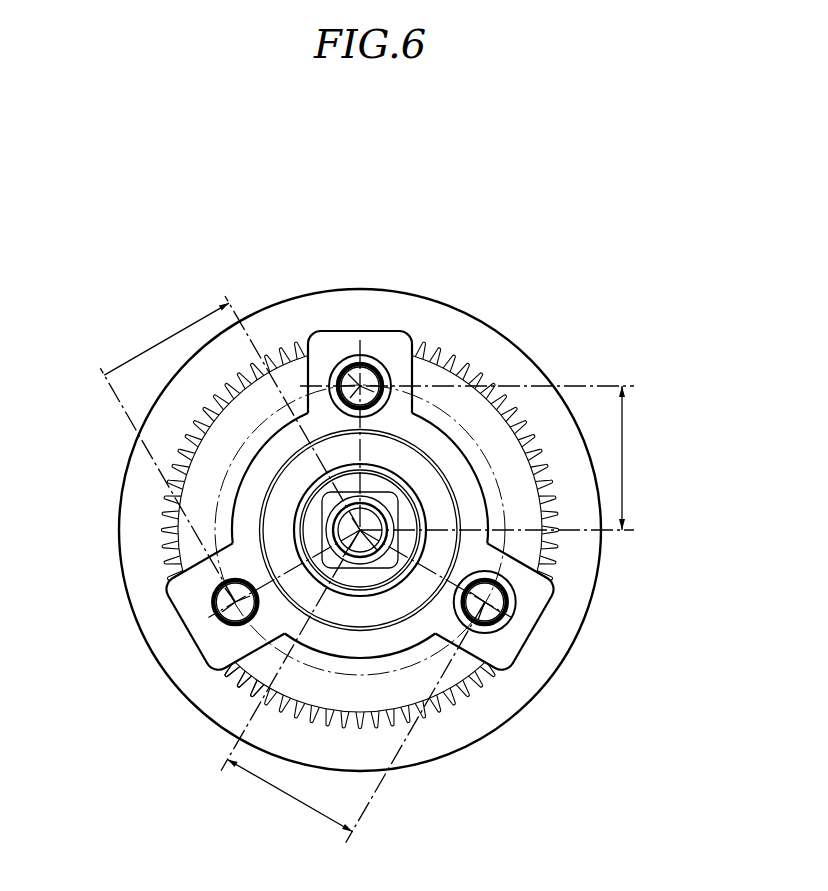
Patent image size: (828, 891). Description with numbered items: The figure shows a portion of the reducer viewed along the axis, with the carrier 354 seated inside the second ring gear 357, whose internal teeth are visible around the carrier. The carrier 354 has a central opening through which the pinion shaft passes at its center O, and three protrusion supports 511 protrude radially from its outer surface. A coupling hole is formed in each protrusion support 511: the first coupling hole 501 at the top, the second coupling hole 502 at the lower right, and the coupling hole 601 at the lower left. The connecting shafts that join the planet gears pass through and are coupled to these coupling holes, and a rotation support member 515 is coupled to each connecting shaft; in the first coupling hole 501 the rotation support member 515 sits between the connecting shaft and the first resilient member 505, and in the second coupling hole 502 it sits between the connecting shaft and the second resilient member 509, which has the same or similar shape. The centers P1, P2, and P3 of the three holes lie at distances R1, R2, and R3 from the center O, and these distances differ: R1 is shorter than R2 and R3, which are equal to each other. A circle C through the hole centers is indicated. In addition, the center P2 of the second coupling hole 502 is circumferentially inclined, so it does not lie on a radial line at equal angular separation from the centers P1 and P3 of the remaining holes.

The second ring gear 357 is at (587, 578).
The first coupling hole 501 is at (423, 355).
The coupling hole 601 is at (233, 667).
The carrier 354 is at (413, 640).
The protrusion supports 511 is at (403, 340).
The first resilient member 505 is at (358, 355).
The second resilient member 509 is at (497, 632).
The second coupling hole 502 is at (520, 614).
The rotation support member 515 is at (368, 366).
The center O is at (358, 530).
The bolt circle C is at (230, 472).
The center of first coupling hole P1 is at (360, 386).
The center of second coupling hole P2 is at (487, 602).
The center of coupling hole P3 is at (236, 602).
The distance R1 is at (630, 462).
The distance R2 is at (287, 800).
The distance R3 is at (165, 338).